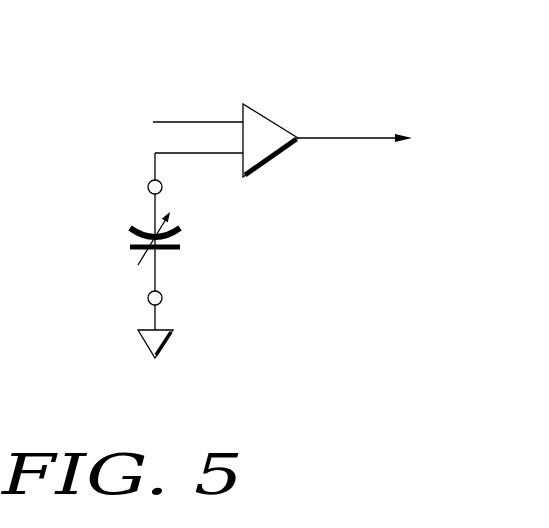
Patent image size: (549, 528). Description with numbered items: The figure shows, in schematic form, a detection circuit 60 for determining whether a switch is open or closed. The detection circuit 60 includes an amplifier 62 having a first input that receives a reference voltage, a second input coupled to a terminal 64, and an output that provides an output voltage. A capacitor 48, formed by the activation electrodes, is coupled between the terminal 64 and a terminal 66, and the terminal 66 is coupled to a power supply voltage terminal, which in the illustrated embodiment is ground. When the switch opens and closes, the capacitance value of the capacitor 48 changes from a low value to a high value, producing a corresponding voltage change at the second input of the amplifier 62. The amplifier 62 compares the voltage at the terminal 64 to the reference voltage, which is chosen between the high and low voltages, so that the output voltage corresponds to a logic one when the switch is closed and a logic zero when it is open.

The detection circuit 60 is at (137, 70).
The amplifier 62 is at (273, 118).
The terminal 64 is at (148, 187).
The terminal 66 is at (148, 298).
The capacitor 48 is at (172, 248).